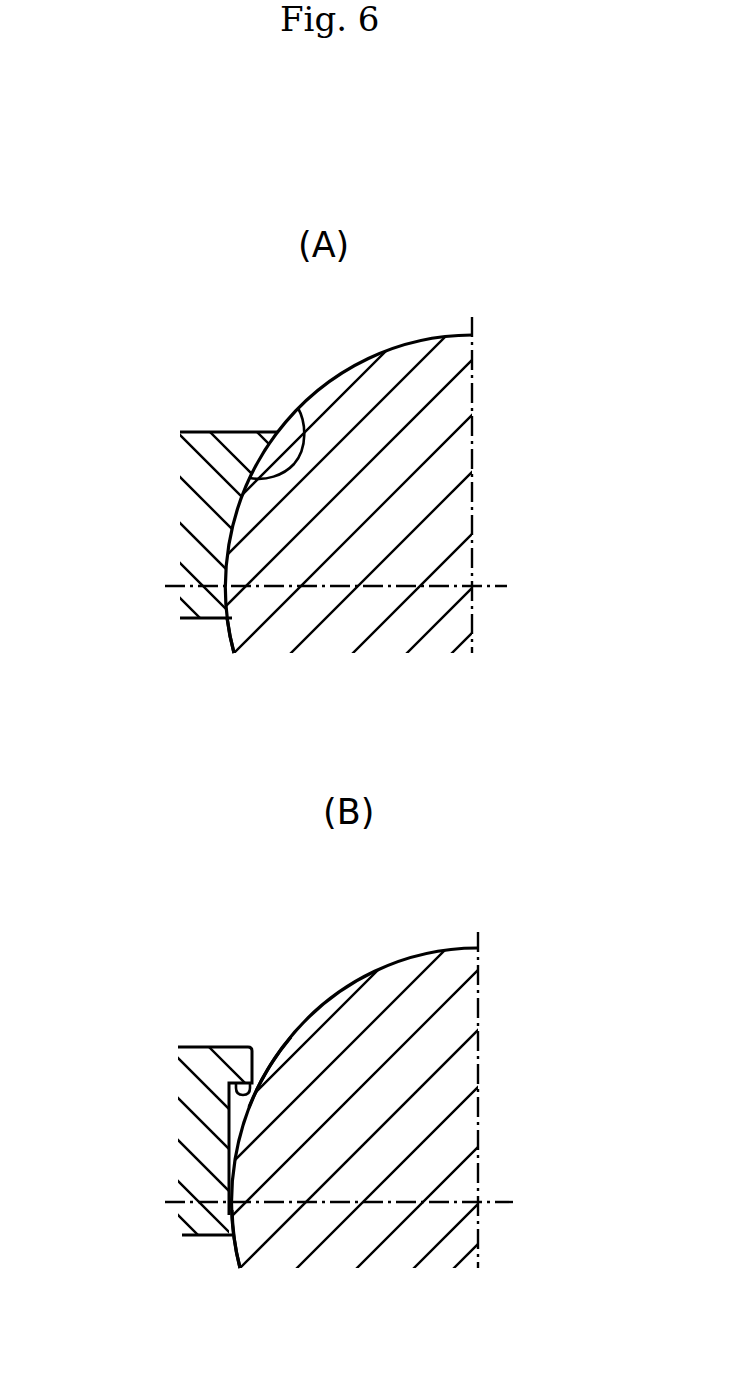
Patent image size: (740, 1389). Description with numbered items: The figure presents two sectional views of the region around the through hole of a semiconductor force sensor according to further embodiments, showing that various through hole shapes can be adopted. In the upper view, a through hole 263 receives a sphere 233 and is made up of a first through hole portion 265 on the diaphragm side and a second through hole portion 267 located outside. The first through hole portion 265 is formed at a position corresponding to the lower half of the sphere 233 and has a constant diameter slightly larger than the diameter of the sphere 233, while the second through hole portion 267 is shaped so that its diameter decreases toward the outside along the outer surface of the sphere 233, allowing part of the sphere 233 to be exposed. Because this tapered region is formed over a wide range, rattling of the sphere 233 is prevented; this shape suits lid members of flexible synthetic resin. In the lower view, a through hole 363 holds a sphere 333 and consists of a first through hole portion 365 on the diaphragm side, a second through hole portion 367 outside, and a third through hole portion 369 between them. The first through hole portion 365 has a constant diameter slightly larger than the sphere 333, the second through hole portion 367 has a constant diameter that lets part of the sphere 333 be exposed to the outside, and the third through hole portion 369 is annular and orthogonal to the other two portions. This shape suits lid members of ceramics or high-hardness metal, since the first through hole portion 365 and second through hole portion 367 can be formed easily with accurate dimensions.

The sphere 233 is at (452, 392).
The through hole 263 is at (229, 547).
The first through hole portion 265 is at (232, 600).
The second through hole portion 267 is at (303, 440).
The sphere 333 is at (450, 1085).
The through hole 363 is at (229, 1140).
The first through hole portion 365 is at (232, 1220).
The second through hole portion 367 is at (252, 1060).
The third through hole portion 369 is at (248, 1078).